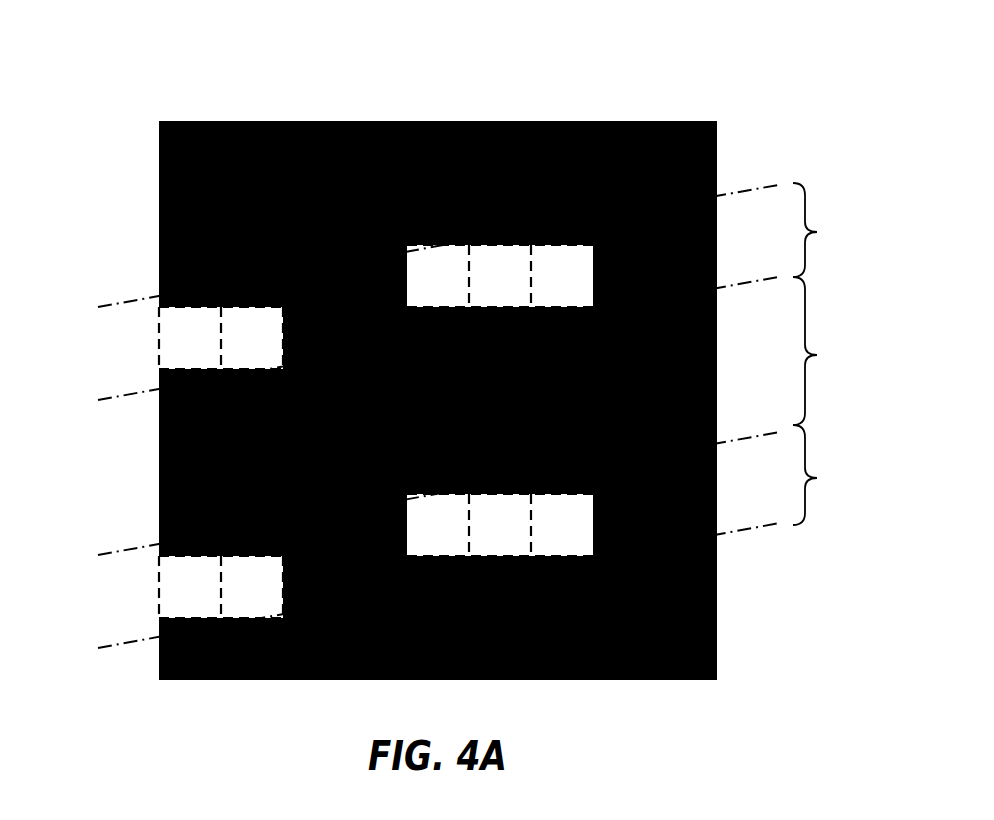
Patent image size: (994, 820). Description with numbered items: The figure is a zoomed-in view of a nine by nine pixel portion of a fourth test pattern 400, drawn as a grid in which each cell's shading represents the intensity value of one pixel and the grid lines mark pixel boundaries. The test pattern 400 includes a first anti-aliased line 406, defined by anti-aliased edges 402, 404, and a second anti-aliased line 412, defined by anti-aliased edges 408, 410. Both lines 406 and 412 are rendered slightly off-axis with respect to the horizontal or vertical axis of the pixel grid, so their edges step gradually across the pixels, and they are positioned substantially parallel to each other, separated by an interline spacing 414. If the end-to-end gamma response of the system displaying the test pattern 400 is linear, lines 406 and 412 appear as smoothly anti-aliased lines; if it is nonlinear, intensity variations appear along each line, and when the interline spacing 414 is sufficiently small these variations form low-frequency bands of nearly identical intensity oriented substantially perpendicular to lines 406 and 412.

The fourth test pattern 400 is at (783, 93).
The anti-aliased edge 402 is at (112, 302).
The anti-aliased edge 404 is at (112, 395).
The first anti-aliased line 406 is at (824, 230).
The anti-aliased edge 408 is at (112, 549).
The anti-aliased edge 410 is at (112, 643).
The second anti-aliased line 412 is at (824, 475).
The interline spacing 414 is at (824, 351).